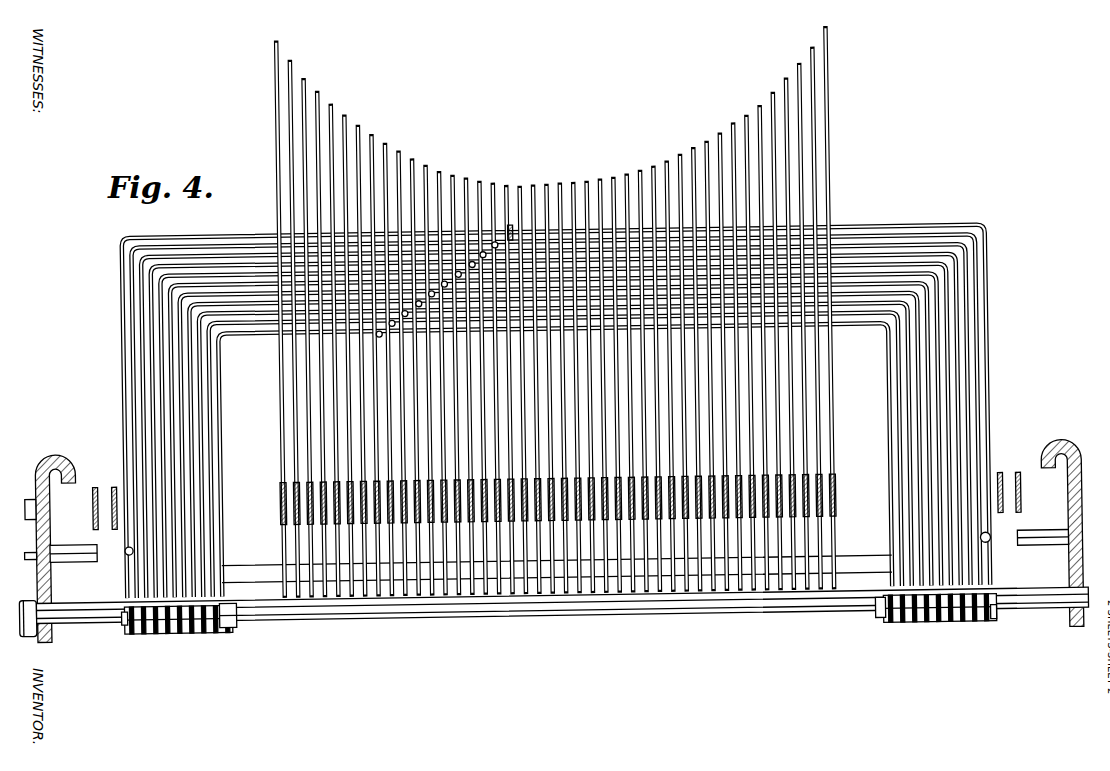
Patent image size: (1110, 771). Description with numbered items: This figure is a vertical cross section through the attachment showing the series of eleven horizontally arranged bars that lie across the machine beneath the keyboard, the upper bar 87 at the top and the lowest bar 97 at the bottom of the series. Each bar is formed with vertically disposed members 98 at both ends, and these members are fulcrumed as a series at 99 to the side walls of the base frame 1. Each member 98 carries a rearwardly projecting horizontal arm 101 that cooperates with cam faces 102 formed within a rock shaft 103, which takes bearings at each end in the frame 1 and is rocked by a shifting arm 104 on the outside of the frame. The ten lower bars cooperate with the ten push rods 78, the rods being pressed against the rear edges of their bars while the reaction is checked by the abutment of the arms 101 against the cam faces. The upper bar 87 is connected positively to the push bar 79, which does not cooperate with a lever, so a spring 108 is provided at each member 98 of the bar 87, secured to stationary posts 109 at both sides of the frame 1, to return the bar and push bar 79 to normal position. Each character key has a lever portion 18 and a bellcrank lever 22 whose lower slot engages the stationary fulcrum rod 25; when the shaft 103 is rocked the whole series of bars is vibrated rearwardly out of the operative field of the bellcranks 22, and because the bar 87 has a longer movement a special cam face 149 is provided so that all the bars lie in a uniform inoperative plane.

The base frame 1 is at (53, 464).
The lever portion 18 is at (272, 498).
The bellcrank lever 22 is at (826, 170).
The stationary fulcrum rod 25 is at (244, 572).
The push rods 78 is at (491, 249).
The push bar 79 is at (507, 233).
The upper bar 87 is at (878, 243).
The horizontal bar 97 is at (253, 340).
The vertically disposed members 98 is at (980, 370).
The fulcrum 99 is at (228, 624).
The horizontal arm 101 is at (158, 636).
The cam faces 102 is at (928, 638).
The rock shaft 103 is at (550, 621).
The shifting arm 104 is at (23, 505).
The spring 108 is at (117, 558).
The stationary posts 109 is at (54, 551).
The special cam face 149 is at (116, 632).